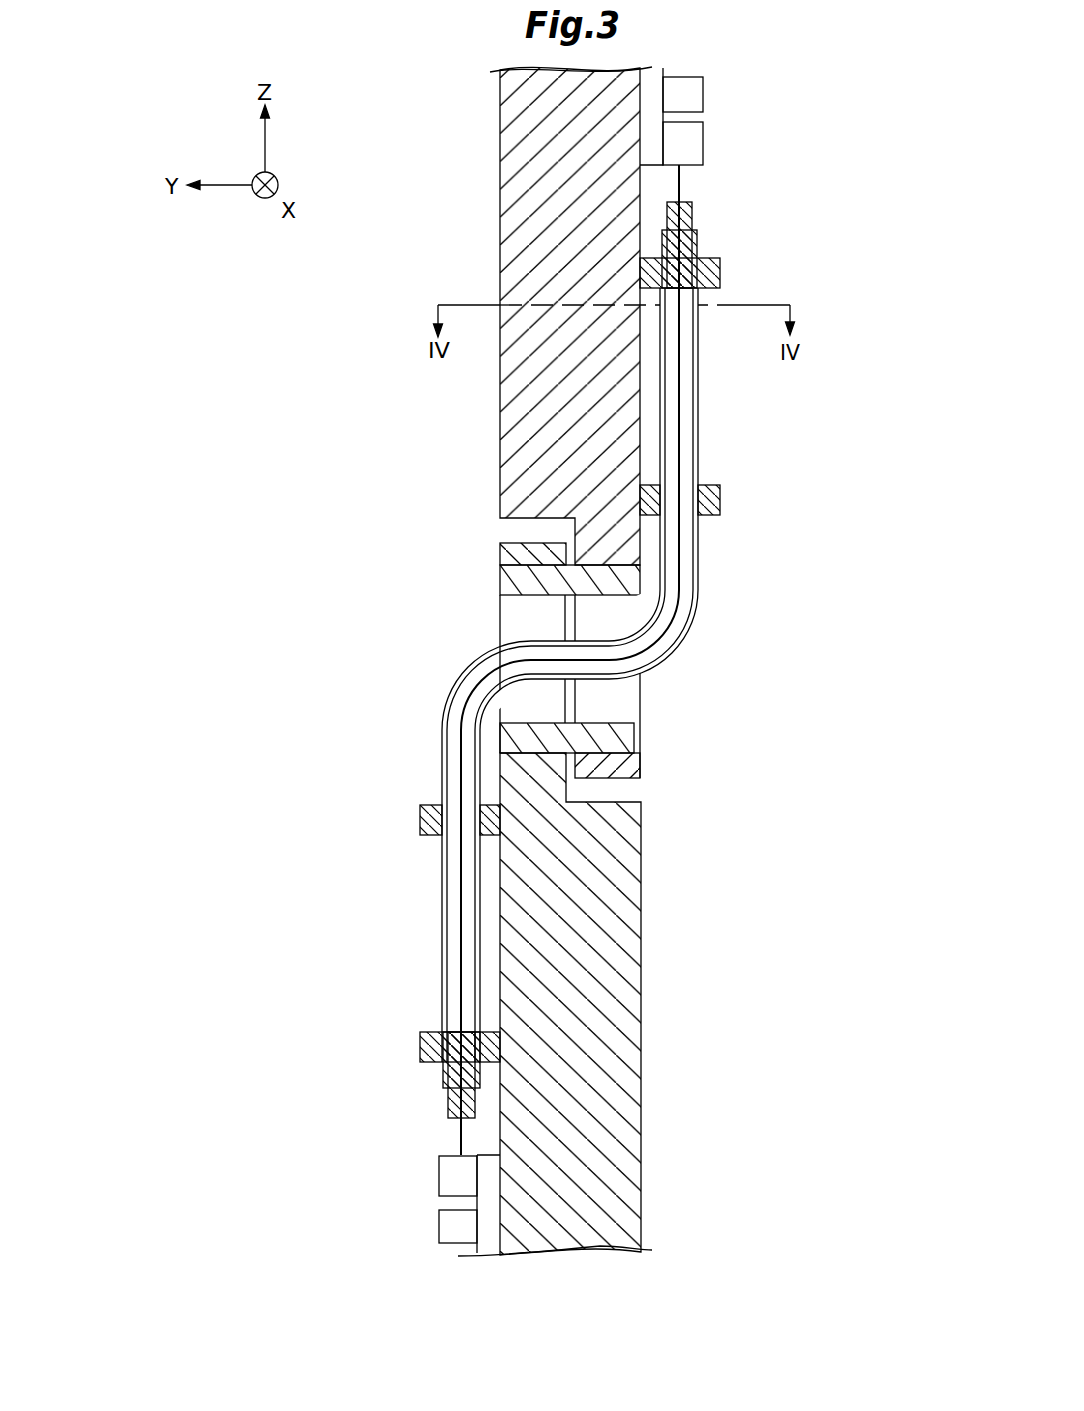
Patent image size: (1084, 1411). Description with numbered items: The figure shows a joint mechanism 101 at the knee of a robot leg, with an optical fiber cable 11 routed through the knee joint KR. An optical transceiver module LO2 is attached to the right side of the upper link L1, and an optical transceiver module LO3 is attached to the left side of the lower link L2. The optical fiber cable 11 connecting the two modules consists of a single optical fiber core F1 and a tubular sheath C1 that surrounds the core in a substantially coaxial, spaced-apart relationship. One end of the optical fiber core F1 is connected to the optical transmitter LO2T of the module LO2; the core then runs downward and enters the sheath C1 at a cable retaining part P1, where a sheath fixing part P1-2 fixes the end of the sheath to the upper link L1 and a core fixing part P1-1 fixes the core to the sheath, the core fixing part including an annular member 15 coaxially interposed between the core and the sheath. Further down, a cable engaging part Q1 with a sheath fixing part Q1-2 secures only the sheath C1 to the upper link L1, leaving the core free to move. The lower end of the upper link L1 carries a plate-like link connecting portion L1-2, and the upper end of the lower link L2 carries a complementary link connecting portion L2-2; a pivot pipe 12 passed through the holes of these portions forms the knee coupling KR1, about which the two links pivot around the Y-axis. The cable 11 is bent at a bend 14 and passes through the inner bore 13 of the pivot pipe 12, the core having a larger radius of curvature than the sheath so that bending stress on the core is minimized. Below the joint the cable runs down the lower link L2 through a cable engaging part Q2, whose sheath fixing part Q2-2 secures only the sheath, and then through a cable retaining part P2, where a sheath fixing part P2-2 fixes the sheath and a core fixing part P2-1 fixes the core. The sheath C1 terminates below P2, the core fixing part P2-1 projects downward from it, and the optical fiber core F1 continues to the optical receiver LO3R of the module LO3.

The joint mechanism 101 is at (432, 384).
The upper link L1 is at (476, 193).
The lower link L2 is at (648, 868).
The optical transceiver module LO2 is at (655, 75).
The optical transmitter LO2T is at (705, 148).
The optical transceiver module LO3 is at (488, 1243).
The optical receiver LO3R is at (439, 1177).
The core fixing part P1-1 is at (688, 203).
The sheath fixing part P1-2 is at (664, 255).
The annular member 15 is at (687, 250).
The cable retaining part P1 is at (732, 269).
The tubular sheath C1 is at (702, 323).
The optical fiber core F1 is at (681, 379).
The optical fiber cable 11 is at (708, 426).
The sheath fixing part Q1-2 is at (655, 484).
The cable engaging part Q1 is at (724, 481).
The link connecting portion L2-2 is at (505, 547).
The knee coupling KR1 is at (500, 617).
The knee joint KR is at (428, 637).
The bend 14 is at (693, 607).
The inner bore 13 is at (640, 712).
The pivot pipe 12 is at (637, 737).
The link connecting portion L1-2 is at (637, 770).
The sheath fixing part Q2-2 is at (482, 804).
The cable engaging part Q2 is at (412, 820).
The sheath fixing part P2-2 is at (485, 1030).
The cable retaining part P2 is at (410, 1028).
The core fixing part P2-1 is at (447, 1095).